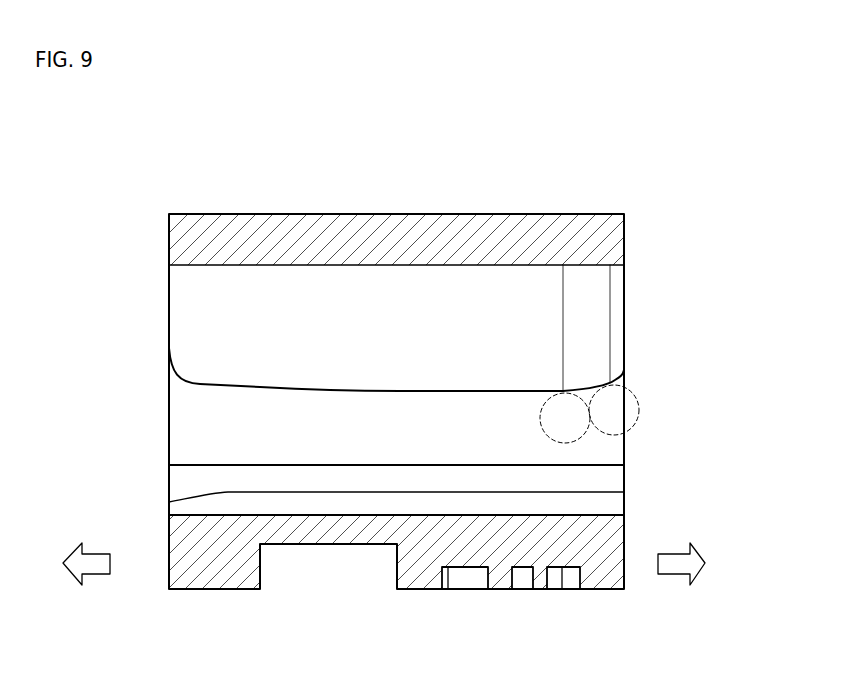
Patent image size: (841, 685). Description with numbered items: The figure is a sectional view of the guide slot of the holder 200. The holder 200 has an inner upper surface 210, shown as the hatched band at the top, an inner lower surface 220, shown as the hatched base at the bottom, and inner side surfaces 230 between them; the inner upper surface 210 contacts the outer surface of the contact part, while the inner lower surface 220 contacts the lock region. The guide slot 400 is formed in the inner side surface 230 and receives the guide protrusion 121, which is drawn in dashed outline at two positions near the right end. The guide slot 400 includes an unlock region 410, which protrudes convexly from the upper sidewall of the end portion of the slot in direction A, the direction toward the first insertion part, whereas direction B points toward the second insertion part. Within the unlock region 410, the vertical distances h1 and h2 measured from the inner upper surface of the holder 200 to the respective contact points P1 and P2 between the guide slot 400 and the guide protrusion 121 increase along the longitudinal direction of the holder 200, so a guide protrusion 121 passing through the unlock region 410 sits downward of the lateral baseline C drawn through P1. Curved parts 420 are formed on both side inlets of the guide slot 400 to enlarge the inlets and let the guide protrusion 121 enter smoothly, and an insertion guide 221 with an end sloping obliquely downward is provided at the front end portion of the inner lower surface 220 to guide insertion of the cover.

The holder 200 is at (312, 166).
The inner upper surface 210 is at (207, 267).
The inner side surface 230 is at (168, 318).
The curved part 420 is at (170, 381).
The guide slot 400 is at (155, 413).
The insertion guide 221 is at (190, 494).
The inner lower surface 220 is at (268, 485).
The unlock region 410 is at (443, 391).
The guide protrusion 121 is at (552, 440).
The vertical distance h1 is at (612, 284).
The vertical distance h2 is at (562, 288).
The contact point P1 is at (605, 383).
The contact point P2 is at (563, 390).
The lateral baseline C is at (628, 380).
The direction A is at (672, 577).
The direction B is at (95, 577).